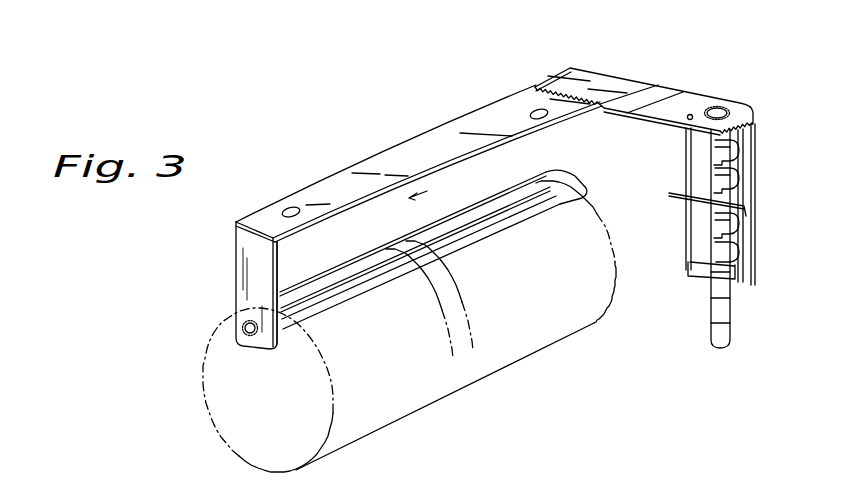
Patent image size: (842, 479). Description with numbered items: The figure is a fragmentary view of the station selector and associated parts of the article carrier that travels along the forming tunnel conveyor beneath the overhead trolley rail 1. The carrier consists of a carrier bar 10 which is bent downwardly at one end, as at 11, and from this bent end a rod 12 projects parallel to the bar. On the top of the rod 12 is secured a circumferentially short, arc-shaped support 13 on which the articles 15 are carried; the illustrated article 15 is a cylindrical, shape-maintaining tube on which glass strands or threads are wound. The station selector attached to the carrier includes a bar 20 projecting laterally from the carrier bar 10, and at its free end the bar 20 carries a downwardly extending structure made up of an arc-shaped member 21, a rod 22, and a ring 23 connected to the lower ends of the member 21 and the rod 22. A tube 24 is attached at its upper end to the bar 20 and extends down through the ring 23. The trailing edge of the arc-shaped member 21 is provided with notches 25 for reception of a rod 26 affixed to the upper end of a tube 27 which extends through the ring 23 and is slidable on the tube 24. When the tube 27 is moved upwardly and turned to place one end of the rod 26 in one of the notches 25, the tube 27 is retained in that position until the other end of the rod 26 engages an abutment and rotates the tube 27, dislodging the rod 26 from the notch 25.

The trolley rail 1 is at (567, 477).
The carrier bar 10 is at (327, 188).
The downwardly bent end of carrier bar 11 is at (243, 268).
The rod 12 is at (250, 334).
The arc-shaped support 13 is at (467, 213).
The article 15 is at (587, 324).
The bar 20 is at (670, 92).
The arc-shaped member 21 is at (755, 260).
The rod 22 is at (688, 165).
The ring 23 is at (697, 272).
The tube 24 is at (711, 143).
The notches 25 is at (713, 182).
The rod 26 is at (669, 193).
The tube 27 is at (710, 327).